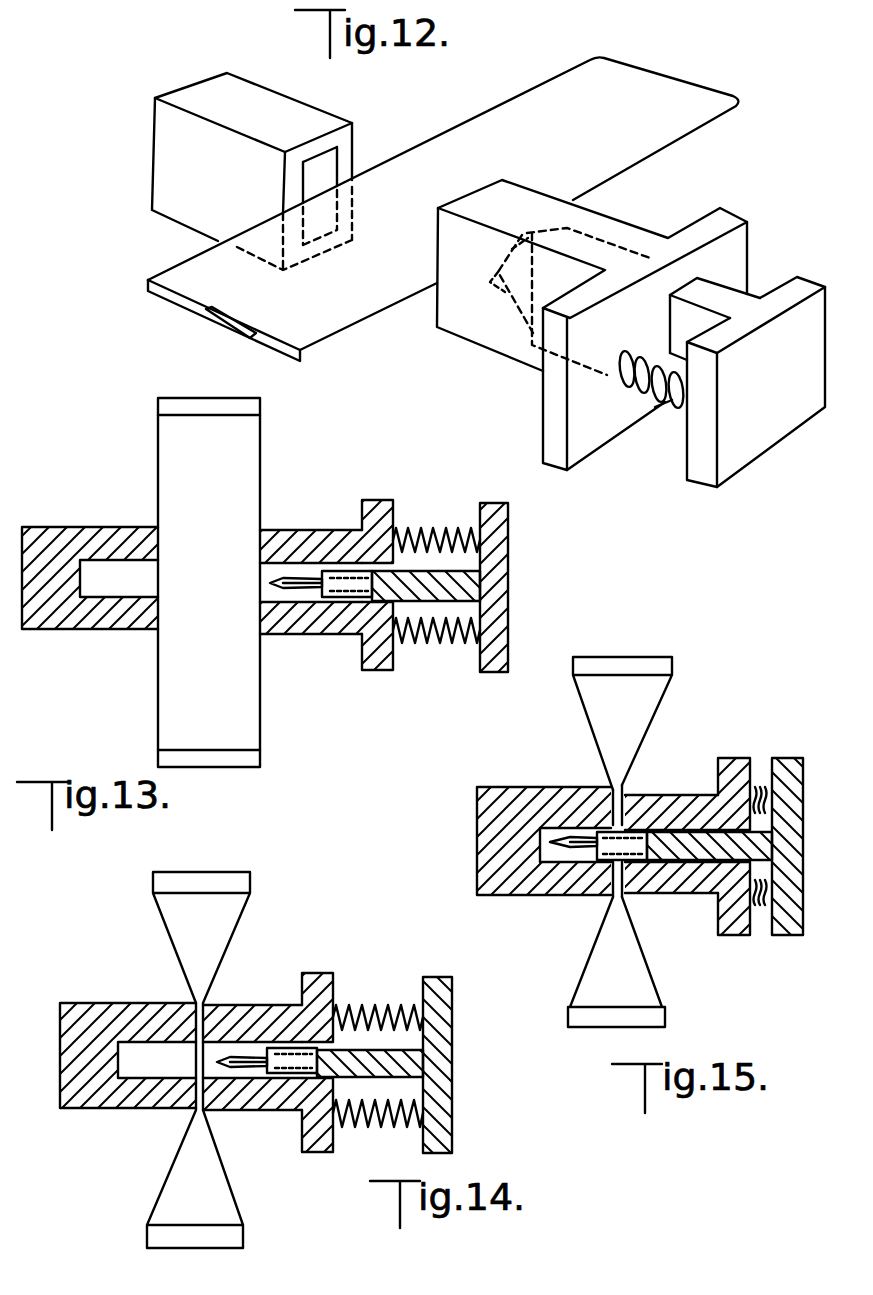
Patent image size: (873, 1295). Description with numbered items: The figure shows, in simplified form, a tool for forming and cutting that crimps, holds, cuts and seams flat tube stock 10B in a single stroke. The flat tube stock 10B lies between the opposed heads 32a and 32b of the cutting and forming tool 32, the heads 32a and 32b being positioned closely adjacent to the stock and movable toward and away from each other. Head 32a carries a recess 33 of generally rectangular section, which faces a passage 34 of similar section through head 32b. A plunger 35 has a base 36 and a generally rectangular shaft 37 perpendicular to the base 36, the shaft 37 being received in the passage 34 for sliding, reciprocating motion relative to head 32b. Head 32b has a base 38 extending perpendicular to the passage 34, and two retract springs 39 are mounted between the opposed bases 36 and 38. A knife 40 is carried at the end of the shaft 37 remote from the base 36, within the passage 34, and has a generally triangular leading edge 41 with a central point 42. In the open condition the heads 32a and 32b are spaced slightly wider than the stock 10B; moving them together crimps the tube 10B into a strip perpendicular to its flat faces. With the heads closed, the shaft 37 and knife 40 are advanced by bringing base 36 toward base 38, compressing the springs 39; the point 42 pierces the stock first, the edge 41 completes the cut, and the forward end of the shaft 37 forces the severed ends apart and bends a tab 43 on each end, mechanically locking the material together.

In FIG. 12, the flat tube stock 10B is at (573, 73).
In FIG. 13, the flat tube stock 10B is at (253, 450).
In FIG. 12, the cutting and forming tool 32 is at (592, 333).
In FIG. 12, the tool head 32a is at (353, 98).
In FIG. 13, the tool head 32a is at (108, 527).
In FIG. 14, the tool head 32a is at (125, 1003).
In FIG. 15, the tool head 32a is at (542, 787).
In FIG. 12, the tool head 32b is at (477, 345).
In FIG. 13, the tool head 32b is at (308, 530).
In FIG. 14, the tool head 32b is at (280, 1003).
In FIG. 15, the tool head 32b is at (692, 794).
In FIG. 12, the recess 33 is at (333, 163).
In FIG. 13, the recess 33 is at (110, 598).
In FIG. 14, the recess 33 is at (145, 1078).
In FIG. 15, the recess 33 is at (552, 862).
In FIG. 13, the passage 34 is at (310, 598).
In FIG. 14, the passage 34 is at (233, 1074).
In FIG. 15, the passage 34 is at (663, 861).
In FIG. 12, the plunger 35 is at (721, 380).
In FIG. 13, the plunger 35 is at (475, 595).
In FIG. 14, the plunger 35 is at (417, 1061).
In FIG. 15, the plunger 35 is at (733, 854).
In FIG. 12, the base of plunger 36 is at (778, 427).
In FIG. 13, the base of plunger 36 is at (512, 530).
In FIG. 14, the base of plunger 36 is at (452, 1095).
In FIG. 15, the base of plunger 36 is at (797, 758).
In FIG. 12, the shaft 37 is at (738, 292).
In FIG. 13, the shaft 37 is at (455, 600).
In FIG. 14, the shaft 37 is at (405, 1048).
In FIG. 15, the shaft 37 is at (695, 861).
In FIG. 12, the base of head 38 is at (585, 445).
In FIG. 13, the base of head 38 is at (395, 504).
In FIG. 14, the base of head 38 is at (335, 982).
In FIG. 15, the base of head 38 is at (752, 760).
In FIG. 12, the retract springs 39 is at (668, 408).
In FIG. 13, the retract springs 39 is at (427, 530).
In FIG. 14, the retract springs 39 is at (372, 1007).
In FIG. 15, the retract springs 39 is at (758, 880).
In FIG. 12, the knife 40 is at (517, 303).
In FIG. 13, the knife 40 is at (283, 593).
In FIG. 14, the knife 40 is at (236, 1060).
In FIG. 15, the knife 40 is at (570, 862).
In FIG. 12, the leading edge 41 is at (510, 255).
In FIG. 12, the central point 42 is at (498, 265).
In FIG. 15, the tab 43 is at (612, 825).